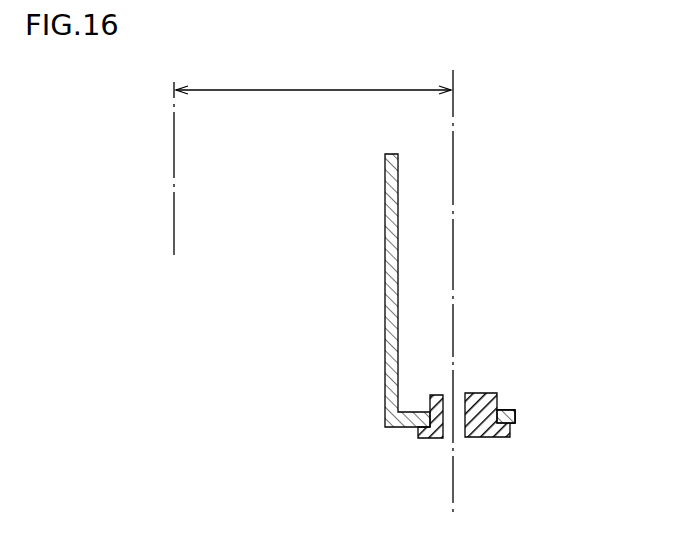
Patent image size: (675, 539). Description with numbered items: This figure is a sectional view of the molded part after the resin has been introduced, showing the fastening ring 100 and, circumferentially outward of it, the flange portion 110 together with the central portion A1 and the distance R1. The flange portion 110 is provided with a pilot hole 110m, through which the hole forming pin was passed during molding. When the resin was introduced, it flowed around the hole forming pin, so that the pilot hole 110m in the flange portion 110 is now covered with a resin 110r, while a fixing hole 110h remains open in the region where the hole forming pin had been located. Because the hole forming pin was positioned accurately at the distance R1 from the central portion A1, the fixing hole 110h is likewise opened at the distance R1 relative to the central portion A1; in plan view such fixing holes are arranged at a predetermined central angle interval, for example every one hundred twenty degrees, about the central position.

The fastening ring 100 is at (390, 177).
The flange portion 110 is at (515, 420).
The resin 110r is at (482, 400).
The pilot hole 110m is at (492, 412).
The fixing hole 110h is at (458, 402).
The central portion A1 is at (175, 233).
The distance R1 is at (313, 81).